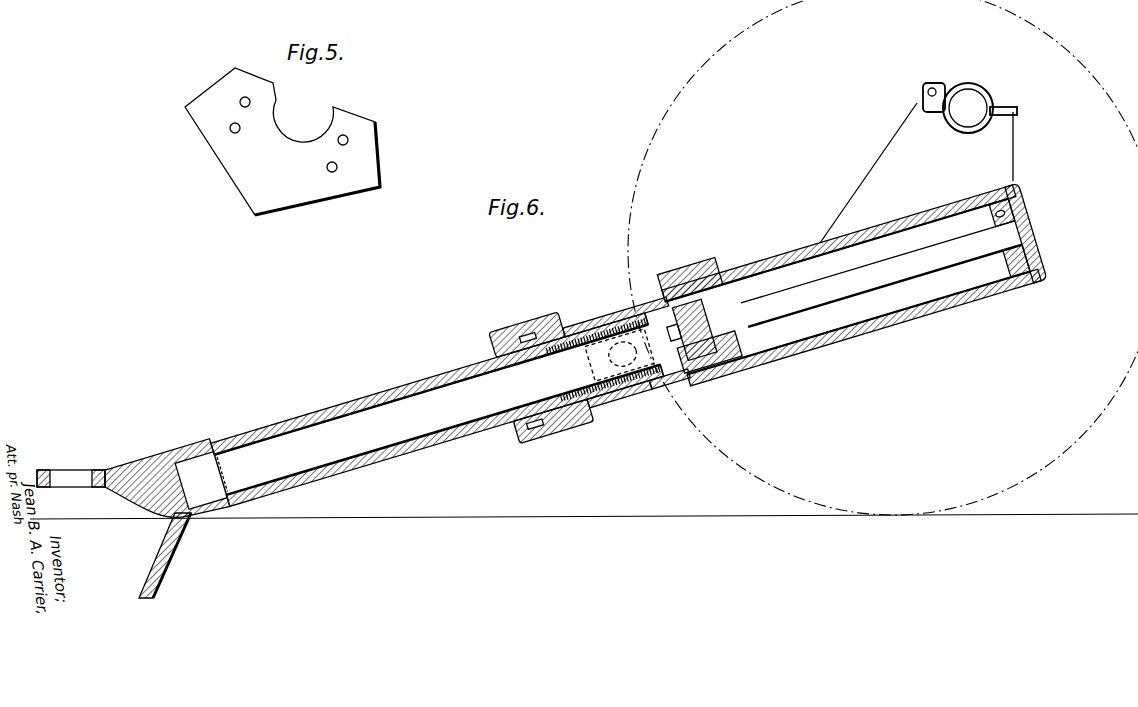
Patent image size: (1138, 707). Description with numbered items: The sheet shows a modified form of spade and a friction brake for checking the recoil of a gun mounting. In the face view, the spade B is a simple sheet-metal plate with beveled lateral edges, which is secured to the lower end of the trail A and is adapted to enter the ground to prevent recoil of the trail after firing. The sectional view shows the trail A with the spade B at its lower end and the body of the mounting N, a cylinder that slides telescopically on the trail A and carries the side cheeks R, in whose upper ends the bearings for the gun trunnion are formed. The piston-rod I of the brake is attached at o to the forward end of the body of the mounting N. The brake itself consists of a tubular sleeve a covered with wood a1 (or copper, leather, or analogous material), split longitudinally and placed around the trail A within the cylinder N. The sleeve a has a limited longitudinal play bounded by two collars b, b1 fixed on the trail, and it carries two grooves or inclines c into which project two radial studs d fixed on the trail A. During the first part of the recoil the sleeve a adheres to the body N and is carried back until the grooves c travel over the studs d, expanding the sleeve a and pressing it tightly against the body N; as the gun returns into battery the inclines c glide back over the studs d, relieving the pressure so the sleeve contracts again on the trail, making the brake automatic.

In FIG. 6, the trail A is at (437, 409).
In FIG. 5, the spade B is at (282, 141).
In FIG. 6, the spade B is at (165, 555).
In FIG. 6, the tubular sleeve a is at (631, 367).
In FIG. 6, the wood covering a1 is at (673, 395).
In FIG. 6, the collar b is at (541, 379).
In FIG. 6, the collar b1 is at (704, 330).
In FIG. 6, the grooves or inclines c is at (656, 341).
In FIG. 6, the radial studs d is at (612, 357).
In FIG. 6, the body of the mounting N is at (854, 284).
In FIG. 6, the piston-rod I is at (881, 274).
In FIG. 6, the side cheeks R is at (918, 163).
In FIG. 6, the attachment point o is at (1003, 213).